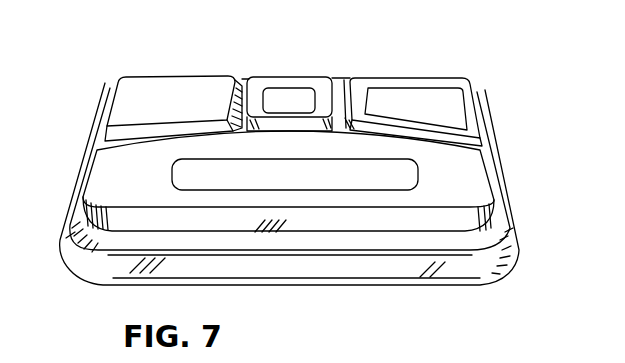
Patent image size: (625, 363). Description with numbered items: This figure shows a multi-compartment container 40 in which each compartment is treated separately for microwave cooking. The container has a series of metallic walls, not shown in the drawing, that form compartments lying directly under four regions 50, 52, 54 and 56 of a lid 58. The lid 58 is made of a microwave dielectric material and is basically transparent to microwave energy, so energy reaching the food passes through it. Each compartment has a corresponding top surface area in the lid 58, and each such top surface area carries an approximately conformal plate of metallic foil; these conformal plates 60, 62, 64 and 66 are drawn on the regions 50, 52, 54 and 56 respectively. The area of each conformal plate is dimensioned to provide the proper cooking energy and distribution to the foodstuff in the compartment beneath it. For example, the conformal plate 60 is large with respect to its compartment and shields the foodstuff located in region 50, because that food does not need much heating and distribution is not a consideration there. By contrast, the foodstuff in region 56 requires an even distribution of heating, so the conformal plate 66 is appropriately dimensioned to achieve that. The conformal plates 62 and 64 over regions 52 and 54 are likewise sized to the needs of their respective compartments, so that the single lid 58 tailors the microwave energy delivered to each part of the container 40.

The multi-compartment container 40 is at (412, 286).
The region 50 is at (156, 87).
The region 52 is at (263, 82).
The region 54 is at (413, 89).
The region 56 is at (319, 181).
The lid 58 is at (505, 275).
The conformal plate 60 is at (161, 111).
The conformal plate 62 is at (298, 77).
The conformal plate 64 is at (447, 116).
The conformal plate 66 is at (309, 182).